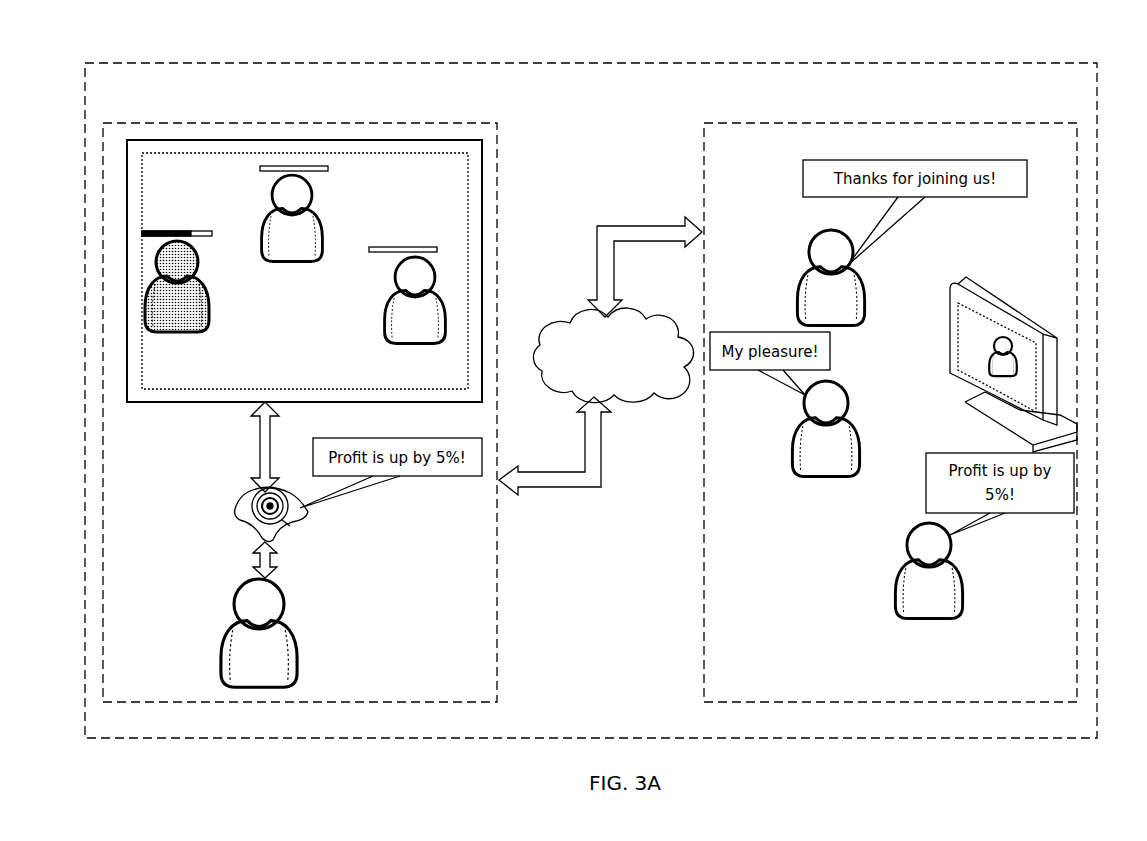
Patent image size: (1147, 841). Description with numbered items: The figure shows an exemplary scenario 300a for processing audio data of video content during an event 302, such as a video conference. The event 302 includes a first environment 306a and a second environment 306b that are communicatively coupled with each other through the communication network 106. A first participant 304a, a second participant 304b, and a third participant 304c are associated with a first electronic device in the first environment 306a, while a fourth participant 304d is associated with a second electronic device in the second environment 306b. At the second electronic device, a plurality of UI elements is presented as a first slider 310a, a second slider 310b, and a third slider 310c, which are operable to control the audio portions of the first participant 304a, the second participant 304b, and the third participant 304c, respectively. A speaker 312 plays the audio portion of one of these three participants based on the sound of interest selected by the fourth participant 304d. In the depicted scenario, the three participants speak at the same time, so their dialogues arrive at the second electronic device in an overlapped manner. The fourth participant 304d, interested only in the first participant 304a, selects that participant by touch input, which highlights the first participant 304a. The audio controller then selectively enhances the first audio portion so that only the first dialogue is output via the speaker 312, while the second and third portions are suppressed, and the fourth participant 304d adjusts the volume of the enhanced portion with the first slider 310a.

The exemplary scenario 300a is at (1095, 54).
The event 302 is at (833, 63).
The first environment 306a is at (705, 123).
The second environment 306b is at (499, 123).
The first participant 304a is at (158, 315).
The second participant 304b is at (273, 246).
The third participant 304c is at (396, 329).
The fourth participant 304d is at (240, 665).
The first slider 310a is at (192, 232).
The second slider 310b is at (300, 168).
The third slider 310c is at (398, 248).
The speaker 312 is at (290, 528).
The communication network 106 is at (655, 377).